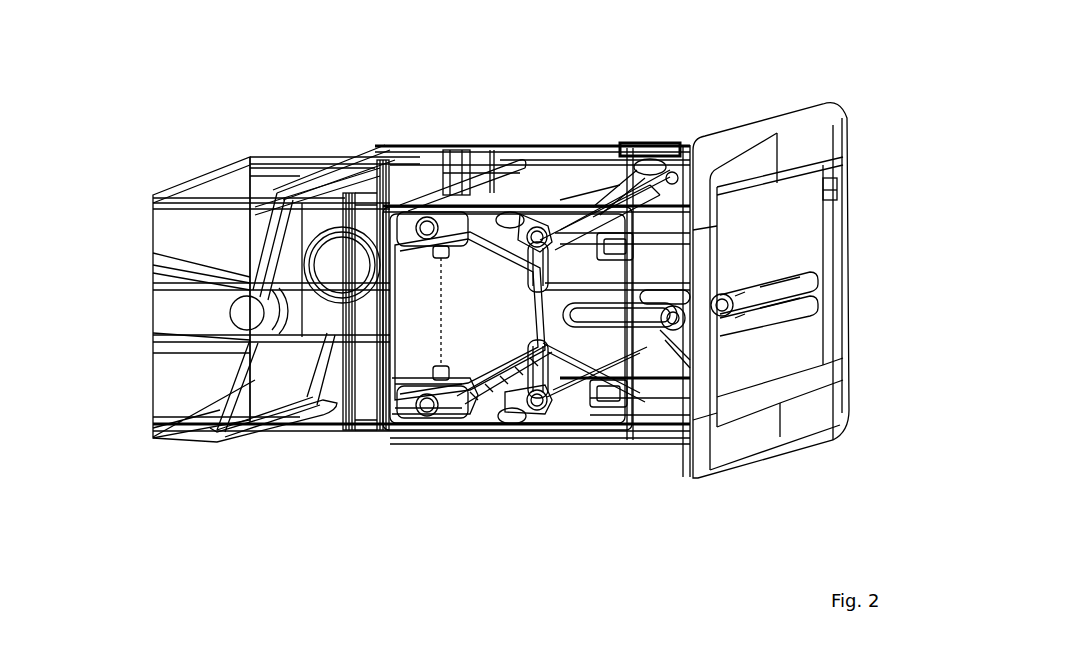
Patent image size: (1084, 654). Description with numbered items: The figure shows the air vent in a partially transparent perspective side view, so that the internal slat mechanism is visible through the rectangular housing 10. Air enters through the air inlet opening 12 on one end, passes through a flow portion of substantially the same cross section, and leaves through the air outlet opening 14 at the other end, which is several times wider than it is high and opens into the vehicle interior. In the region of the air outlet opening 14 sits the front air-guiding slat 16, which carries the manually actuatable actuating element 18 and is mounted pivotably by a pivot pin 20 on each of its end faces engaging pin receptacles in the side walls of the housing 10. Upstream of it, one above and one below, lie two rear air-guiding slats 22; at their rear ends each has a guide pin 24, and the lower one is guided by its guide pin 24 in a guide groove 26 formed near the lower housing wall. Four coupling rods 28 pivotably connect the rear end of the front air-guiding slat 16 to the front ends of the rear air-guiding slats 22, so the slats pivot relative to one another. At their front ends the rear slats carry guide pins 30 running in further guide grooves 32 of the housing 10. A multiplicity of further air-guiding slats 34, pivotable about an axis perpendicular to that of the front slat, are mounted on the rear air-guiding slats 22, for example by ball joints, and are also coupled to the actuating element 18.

The housing 10 is at (657, 145).
The air inlet opening 12 is at (190, 178).
The air outlet opening 14 is at (793, 217).
The front air-guiding slat 16 is at (635, 317).
The actuating element 18 is at (797, 285).
The pivot pin 20 is at (672, 323).
The rear air-guiding slat 22 is at (522, 148).
The guide pin 24 is at (425, 228).
The guide groove 26 is at (408, 432).
The coupling rod 28 is at (563, 290).
The guide pin 30 is at (537, 237).
The further guide groove 32 is at (556, 288).
The further air-guiding slat 34 is at (463, 325).